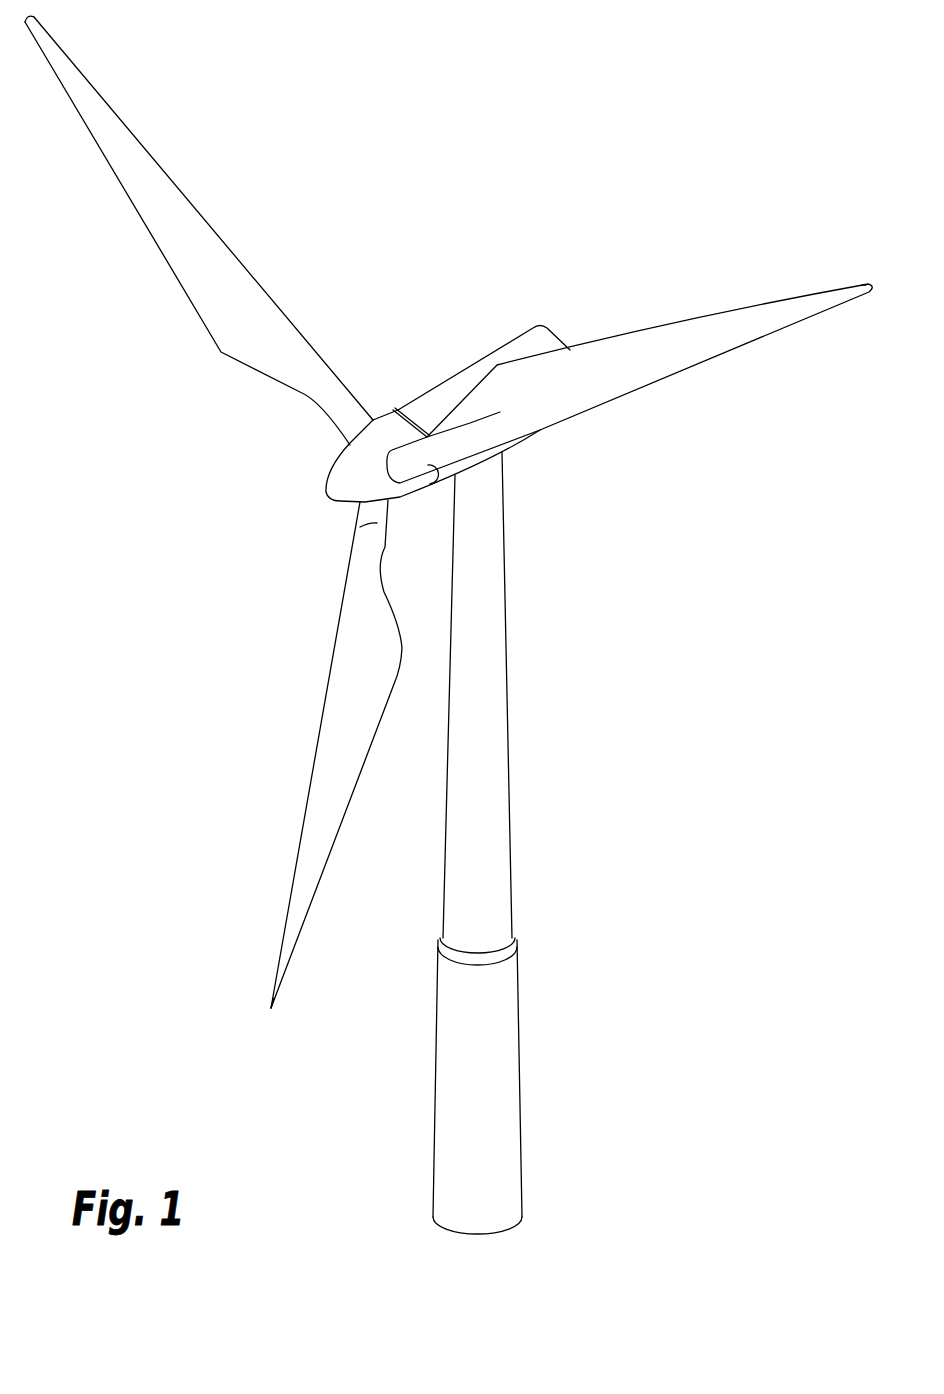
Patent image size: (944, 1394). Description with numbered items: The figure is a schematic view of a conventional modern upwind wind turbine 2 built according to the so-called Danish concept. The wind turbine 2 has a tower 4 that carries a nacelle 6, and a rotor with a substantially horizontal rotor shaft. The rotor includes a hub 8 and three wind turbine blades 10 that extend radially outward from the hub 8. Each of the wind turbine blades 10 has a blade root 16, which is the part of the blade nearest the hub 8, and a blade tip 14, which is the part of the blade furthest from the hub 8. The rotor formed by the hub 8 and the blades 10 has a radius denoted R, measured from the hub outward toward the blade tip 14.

The wind turbine 2 is at (448, 625).
The tower 4 is at (495, 698).
The nacelle 6 is at (440, 390).
The hub 8 is at (347, 480).
The wind turbine blade 10 is at (231, 324).
The blade tip 14 is at (78, 78).
The blade root 16 is at (353, 430).